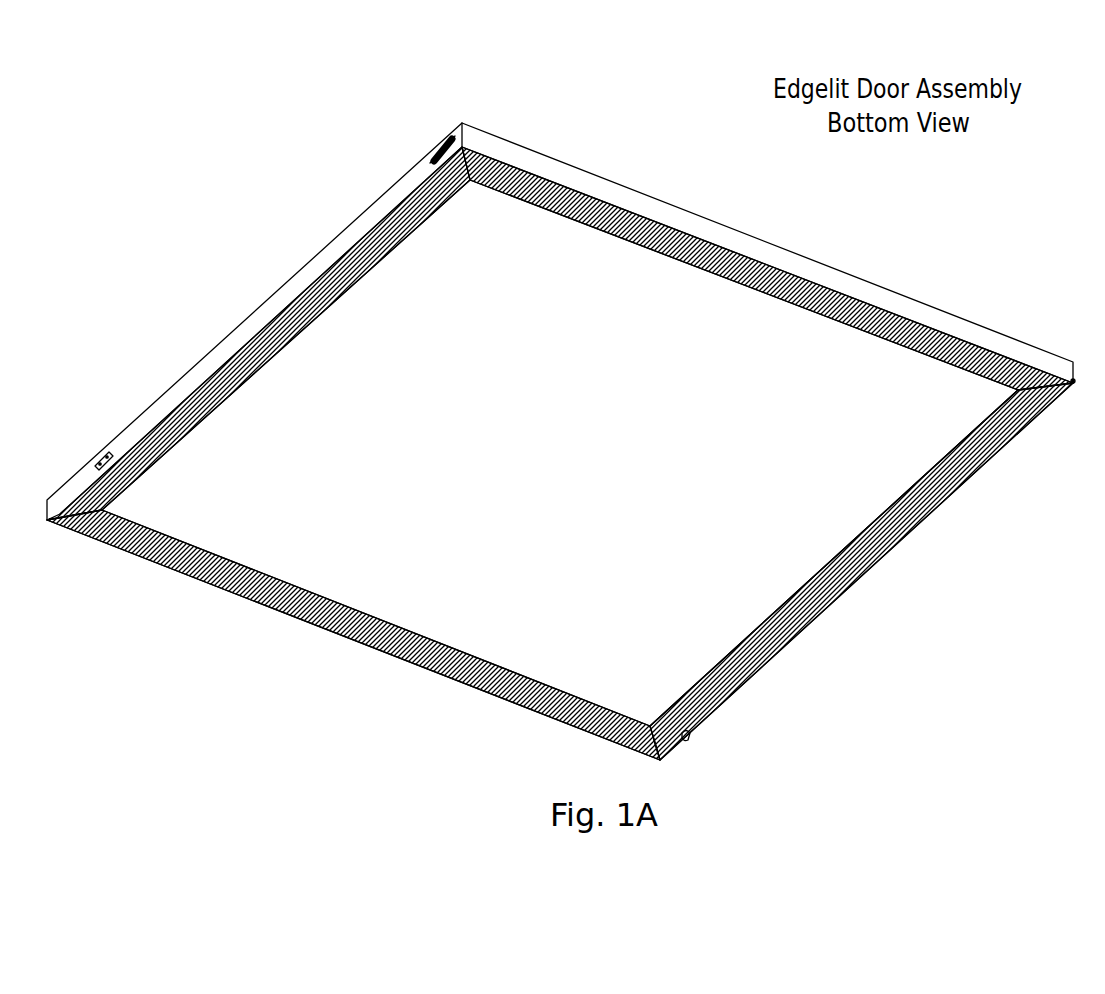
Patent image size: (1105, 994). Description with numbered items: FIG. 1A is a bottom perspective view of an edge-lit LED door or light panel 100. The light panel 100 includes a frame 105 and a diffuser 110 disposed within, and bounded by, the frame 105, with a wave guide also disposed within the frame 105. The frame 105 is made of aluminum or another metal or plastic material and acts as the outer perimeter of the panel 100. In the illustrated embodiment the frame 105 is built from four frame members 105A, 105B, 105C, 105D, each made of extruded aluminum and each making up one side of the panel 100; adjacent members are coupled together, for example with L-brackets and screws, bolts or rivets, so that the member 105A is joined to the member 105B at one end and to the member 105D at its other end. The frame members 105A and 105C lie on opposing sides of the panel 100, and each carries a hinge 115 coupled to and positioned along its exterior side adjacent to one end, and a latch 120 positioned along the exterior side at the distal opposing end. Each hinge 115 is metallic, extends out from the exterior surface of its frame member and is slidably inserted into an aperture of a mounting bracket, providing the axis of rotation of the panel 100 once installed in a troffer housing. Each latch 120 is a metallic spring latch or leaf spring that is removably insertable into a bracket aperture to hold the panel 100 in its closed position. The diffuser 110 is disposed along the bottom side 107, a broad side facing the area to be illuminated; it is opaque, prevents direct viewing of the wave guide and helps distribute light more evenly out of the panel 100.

The edge-lit LED light panel 100 is at (104, 148).
The frame 105 is at (288, 275).
The frame member 105A is at (205, 395).
The frame member 105B is at (222, 582).
The frame member 105C is at (783, 627).
The frame member 105D is at (908, 310).
The bottom side 107 is at (865, 498).
The diffuser 110 is at (437, 560).
The hinge 115 is at (1075, 407).
The latch 120 is at (90, 455).